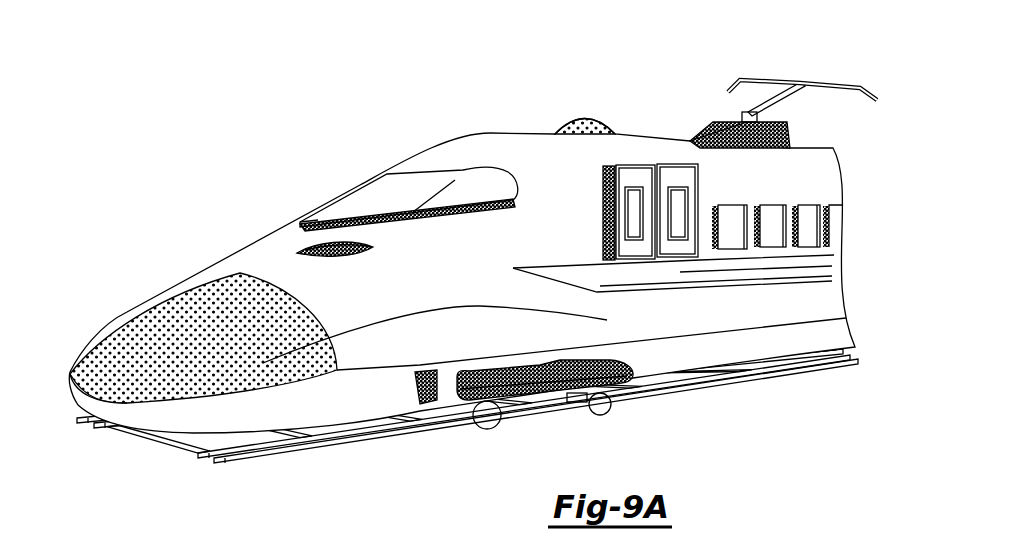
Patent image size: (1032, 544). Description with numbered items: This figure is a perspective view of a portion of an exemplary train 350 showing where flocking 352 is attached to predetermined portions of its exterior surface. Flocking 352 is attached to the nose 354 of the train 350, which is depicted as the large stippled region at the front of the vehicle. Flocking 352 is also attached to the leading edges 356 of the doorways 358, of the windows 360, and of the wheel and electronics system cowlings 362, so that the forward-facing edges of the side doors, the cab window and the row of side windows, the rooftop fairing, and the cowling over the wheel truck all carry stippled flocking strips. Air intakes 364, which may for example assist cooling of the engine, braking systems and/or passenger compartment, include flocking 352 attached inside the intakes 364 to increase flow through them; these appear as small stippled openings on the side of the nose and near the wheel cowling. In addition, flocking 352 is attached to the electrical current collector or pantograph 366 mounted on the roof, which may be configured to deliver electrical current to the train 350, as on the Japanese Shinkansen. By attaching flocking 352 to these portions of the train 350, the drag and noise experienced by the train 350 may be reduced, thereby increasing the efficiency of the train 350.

The train 350 is at (286, 66).
The flocking 352 is at (312, 247).
The nose 354 is at (210, 368).
The leading edges 356 is at (318, 220).
The doorways 358 is at (677, 172).
The windows 360 is at (398, 210).
The wheel and electronics system cowlings 362 is at (596, 124).
The air intakes 364 is at (343, 255).
The pantograph 366 is at (723, 43).